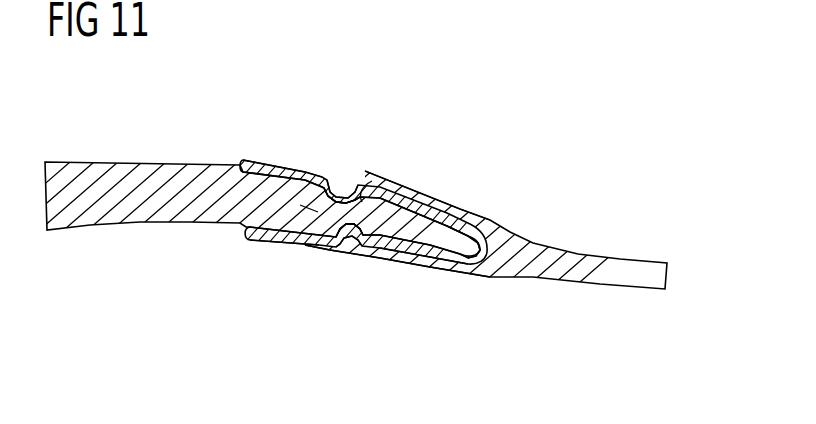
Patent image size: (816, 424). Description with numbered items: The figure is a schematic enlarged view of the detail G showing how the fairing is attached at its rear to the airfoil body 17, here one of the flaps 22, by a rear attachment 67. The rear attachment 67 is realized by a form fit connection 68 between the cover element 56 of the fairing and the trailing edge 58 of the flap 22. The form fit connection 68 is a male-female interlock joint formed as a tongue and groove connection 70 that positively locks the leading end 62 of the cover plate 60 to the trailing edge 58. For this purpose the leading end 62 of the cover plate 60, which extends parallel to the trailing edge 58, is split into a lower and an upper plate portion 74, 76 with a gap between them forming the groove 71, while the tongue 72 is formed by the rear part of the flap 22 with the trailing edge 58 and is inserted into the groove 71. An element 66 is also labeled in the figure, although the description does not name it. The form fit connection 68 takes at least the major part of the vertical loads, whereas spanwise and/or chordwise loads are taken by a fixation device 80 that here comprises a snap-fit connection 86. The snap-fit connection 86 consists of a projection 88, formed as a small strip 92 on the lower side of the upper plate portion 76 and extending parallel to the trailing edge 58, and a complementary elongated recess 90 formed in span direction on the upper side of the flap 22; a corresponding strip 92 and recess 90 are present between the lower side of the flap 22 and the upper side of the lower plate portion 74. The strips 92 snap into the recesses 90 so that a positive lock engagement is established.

The airfoil body 17 is at (258, 186).
The flap 22 is at (75, 162).
The cover element 56 is at (423, 262).
The cover plate 60 is at (645, 270).
The trailing edge 58 is at (433, 232).
The leading end 62 is at (283, 152).
The outer layer 66 is at (458, 233).
The rear attachment 67 is at (429, 305).
The form fit connection 68 is at (429, 305).
The tongue and groove connection 70 is at (468, 283).
The groove 71 is at (311, 219).
The tongue 72 is at (442, 256).
The lower plate portion 74 is at (253, 243).
The upper plate portion 76 is at (296, 159).
The fixation device 80 is at (383, 226).
The snap-fit connection 86 is at (366, 180).
The projection 88 is at (334, 175).
The recess 90 is at (378, 193).
The strip 92 is at (357, 182).
The detail G is at (594, 111).